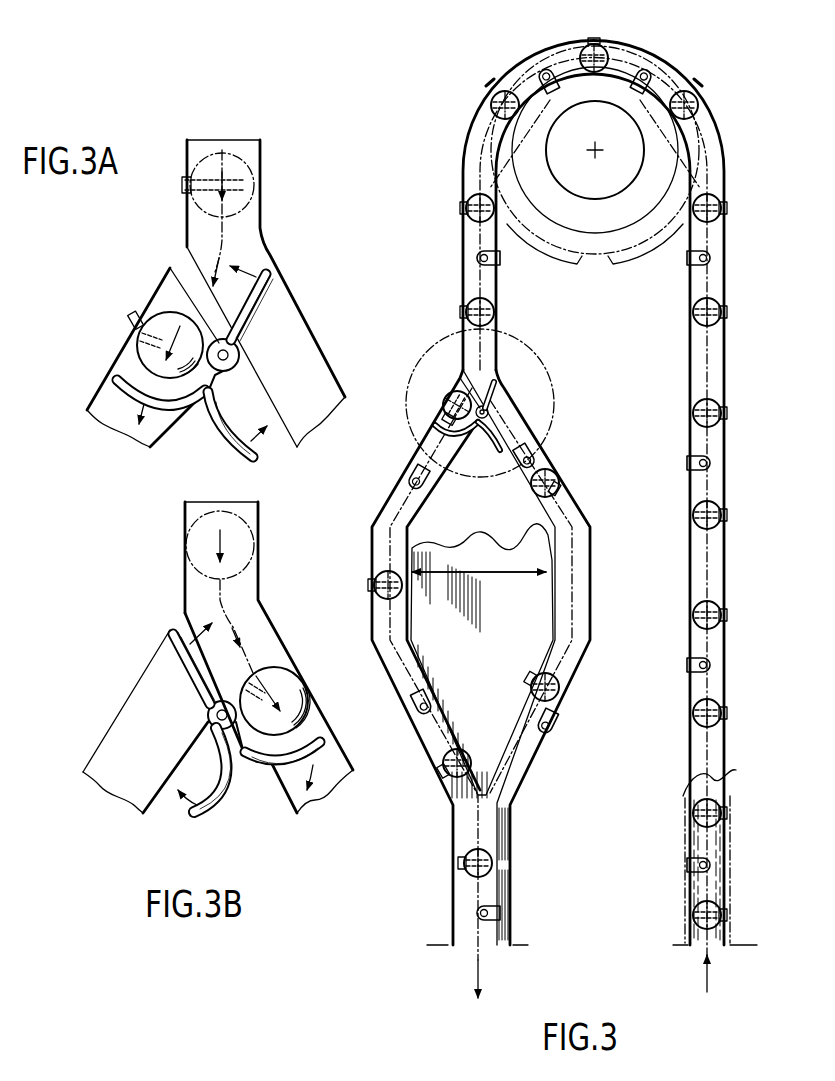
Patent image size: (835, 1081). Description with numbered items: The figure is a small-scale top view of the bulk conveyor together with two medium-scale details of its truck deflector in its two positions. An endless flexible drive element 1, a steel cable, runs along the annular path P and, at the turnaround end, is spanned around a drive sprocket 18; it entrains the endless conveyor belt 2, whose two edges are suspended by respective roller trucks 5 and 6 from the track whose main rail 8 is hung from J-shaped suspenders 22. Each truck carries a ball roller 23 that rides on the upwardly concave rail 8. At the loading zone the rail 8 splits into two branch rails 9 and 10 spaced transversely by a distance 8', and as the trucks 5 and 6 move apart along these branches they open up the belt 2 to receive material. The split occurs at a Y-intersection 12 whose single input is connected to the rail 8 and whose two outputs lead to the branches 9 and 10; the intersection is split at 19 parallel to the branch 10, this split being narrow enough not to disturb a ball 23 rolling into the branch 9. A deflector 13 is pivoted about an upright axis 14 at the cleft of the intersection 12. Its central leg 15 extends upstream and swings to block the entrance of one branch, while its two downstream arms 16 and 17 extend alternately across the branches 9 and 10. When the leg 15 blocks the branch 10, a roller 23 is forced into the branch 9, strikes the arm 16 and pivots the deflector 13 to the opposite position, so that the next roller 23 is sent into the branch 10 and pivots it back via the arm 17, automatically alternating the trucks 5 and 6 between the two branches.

In FIG. 3, the endless flexible drive element 1 is at (707, 357).
In FIG. 3, the conveyor belt 2 is at (512, 848).
In FIG. 3, the roller truck 5 is at (367, 585).
In FIG. 3A, the roller truck 5 is at (136, 318).
In FIG. 3, the roller truck 6 is at (556, 477).
In FIG. 3B, the roller truck 6 is at (238, 693).
In FIG. 3, the main rail 8 is at (548, 527).
In FIG. 3A, the main rail 8 is at (240, 192).
In FIG. 3B, the main rail 8 is at (220, 592).
In FIG. 3, the distance 8' is at (482, 732).
In FIG. 3, the branch rail 9 is at (371, 549).
In FIG. 3A, the branch rail 9 is at (125, 363).
In FIG. 3B, the branch rail 9 is at (103, 760).
In FIG. 3, the branch rail 10 is at (590, 575).
In FIG. 3A, the branch rail 10 is at (311, 401).
In FIG. 3B, the branch rail 10 is at (352, 745).
In FIG. 3, the Y-intersection 12 is at (506, 360).
In FIG. 3A, the Y-intersection 12 is at (271, 238).
In FIG. 3B, the Y-intersection 12 is at (267, 596).
In FIG. 3, the deflector 13 is at (472, 438).
In FIG. 3A, the deflector 13 is at (200, 407).
In FIG. 3B, the deflector 13 is at (246, 774).
In FIG. 3, the axis 14 is at (488, 409).
In FIG. 3A, the axis 14 is at (241, 355).
In FIG. 3B, the axis 14 is at (208, 715).
In FIG. 3, the central leg 15 is at (489, 395).
In FIG. 3A, the central leg 15 is at (266, 308).
In FIG. 3B, the central leg 15 is at (188, 658).
In FIG. 3A, the arm 16 is at (122, 383).
In FIG. 3B, the arm 16 is at (193, 824).
In FIG. 3A, the arm 17 is at (234, 440).
In FIG. 3B, the arm 17 is at (326, 766).
In FIG. 3, the drive sprocket 18 is at (612, 180).
In FIG. 3A, the split 19 is at (181, 263).
In FIG. 3, the J-shaped suspender 22 is at (552, 723).
In FIG. 3, the ball roller 23 is at (717, 607).
In FIG. 3A, the ball roller 23 is at (168, 314).
In FIG. 3B, the ball roller 23 is at (289, 688).
In FIG. 3, the annular path P is at (662, 88).